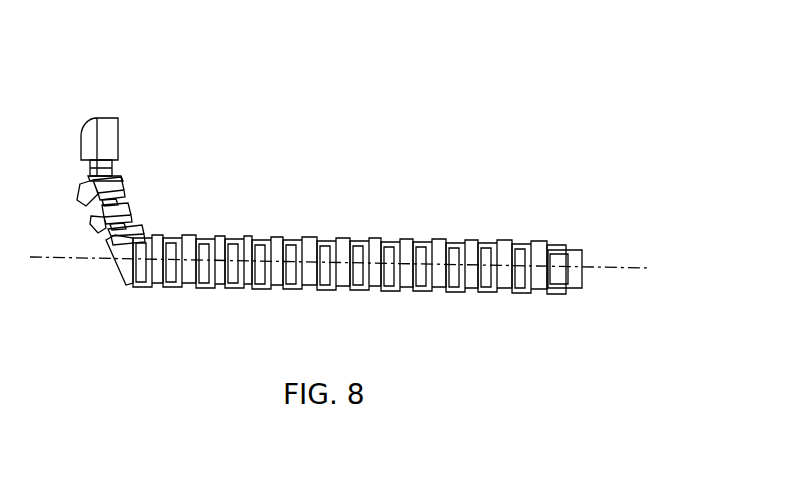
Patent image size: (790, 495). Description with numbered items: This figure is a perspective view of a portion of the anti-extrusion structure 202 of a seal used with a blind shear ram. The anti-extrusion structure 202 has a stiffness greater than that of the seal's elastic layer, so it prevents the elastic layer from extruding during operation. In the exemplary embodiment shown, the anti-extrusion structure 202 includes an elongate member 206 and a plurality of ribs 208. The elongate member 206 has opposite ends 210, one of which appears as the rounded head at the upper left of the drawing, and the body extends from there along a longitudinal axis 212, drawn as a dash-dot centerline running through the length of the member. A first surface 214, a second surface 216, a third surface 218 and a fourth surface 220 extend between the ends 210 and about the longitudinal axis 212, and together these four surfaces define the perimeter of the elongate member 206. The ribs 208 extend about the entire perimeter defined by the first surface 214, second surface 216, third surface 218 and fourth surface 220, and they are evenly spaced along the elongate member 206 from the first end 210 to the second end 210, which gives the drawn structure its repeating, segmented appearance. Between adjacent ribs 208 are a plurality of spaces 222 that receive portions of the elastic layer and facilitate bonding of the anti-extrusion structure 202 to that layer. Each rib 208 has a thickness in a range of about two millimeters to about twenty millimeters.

The anti-extrusion structure 202 is at (100, 50).
The elongate member 206 is at (318, 287).
The ribs 208 is at (543, 296).
The ends 210 is at (103, 115).
The longitudinal axis 212 is at (620, 270).
The first surface 214 is at (573, 247).
The second surface 216 is at (573, 291).
The third surface 218 is at (553, 293).
The fourth surface 220 is at (583, 258).
The spaces 222 is at (230, 234).